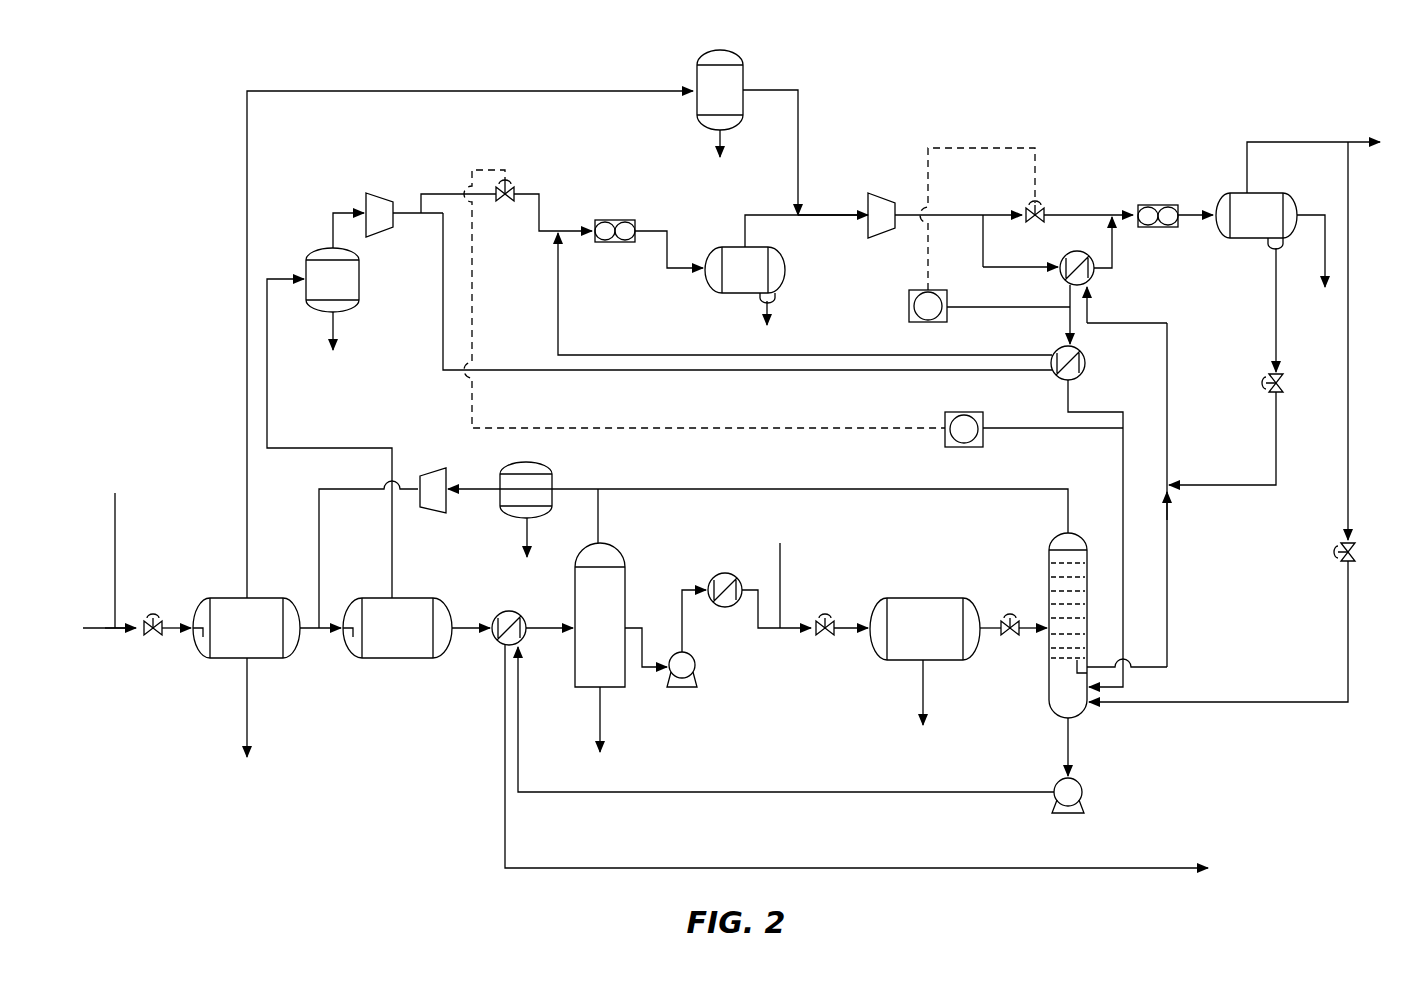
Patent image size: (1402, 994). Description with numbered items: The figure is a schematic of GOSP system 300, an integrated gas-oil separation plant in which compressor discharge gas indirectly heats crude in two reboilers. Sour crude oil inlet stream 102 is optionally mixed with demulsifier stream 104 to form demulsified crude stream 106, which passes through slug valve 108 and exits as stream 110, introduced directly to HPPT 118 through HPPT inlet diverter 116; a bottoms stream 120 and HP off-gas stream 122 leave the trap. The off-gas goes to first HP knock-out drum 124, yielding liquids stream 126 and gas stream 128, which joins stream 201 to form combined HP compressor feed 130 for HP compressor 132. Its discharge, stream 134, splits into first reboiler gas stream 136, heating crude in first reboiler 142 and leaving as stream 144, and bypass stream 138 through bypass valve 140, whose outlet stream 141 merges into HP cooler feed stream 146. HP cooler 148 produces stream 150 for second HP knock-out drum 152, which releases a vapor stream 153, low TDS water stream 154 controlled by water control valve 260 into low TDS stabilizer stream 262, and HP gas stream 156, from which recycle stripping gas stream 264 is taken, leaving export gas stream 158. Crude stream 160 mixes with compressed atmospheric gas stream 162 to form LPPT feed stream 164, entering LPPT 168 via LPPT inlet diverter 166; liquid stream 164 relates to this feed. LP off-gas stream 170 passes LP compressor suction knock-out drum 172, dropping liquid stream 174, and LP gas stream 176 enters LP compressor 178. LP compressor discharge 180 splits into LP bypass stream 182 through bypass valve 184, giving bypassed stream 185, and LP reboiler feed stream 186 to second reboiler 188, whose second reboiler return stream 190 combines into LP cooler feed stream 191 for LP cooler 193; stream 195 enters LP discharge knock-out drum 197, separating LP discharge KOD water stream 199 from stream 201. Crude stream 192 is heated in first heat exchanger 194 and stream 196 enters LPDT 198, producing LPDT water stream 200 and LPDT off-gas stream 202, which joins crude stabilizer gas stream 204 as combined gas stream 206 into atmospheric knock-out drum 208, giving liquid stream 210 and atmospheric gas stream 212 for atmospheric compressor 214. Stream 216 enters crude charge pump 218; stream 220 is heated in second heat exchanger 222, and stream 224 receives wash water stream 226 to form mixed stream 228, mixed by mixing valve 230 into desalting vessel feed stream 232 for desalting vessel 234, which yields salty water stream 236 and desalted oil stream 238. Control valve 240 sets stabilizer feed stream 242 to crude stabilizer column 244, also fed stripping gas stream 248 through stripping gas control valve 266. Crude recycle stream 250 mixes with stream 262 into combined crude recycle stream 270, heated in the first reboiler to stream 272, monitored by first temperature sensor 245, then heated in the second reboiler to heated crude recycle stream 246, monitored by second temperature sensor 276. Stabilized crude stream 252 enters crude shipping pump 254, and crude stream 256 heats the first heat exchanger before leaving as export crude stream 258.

The GOSP system 300 is at (182, 54).
The sour crude oil inlet stream 102 is at (92, 632).
The demulsifier stream 104 is at (118, 505).
The demulsified crude stream 106 is at (130, 632).
The slug valve 108 is at (151, 612).
The stream 110 is at (180, 632).
The HPPT inlet diverter 116 is at (199, 617).
The HPPT 118 is at (246, 628).
The bottoms stream 120 is at (250, 705).
The HP off-gas stream 122 is at (245, 422).
The first HP knock-out drum 124 is at (720, 90).
The liquids stream 126 is at (715, 138).
The gas stream 128 is at (802, 128).
The combined HP compressor feed 130 is at (835, 212).
The HP compressor 132 is at (882, 192).
The stream 134 is at (980, 236).
The first reboiler gas stream 136 is at (1000, 265).
The bypass stream 138 is at (983, 210).
The bypass valve 140 is at (1033, 204).
The stream 141 is at (1075, 211).
The first reboiler 142 is at (1094, 280).
The stream 144 is at (1115, 245).
The HP cooler feed stream 146 is at (1125, 211).
The HP cooler 148 is at (1158, 204).
The stream 150 is at (1195, 211).
The second HP knock-out drum 152 is at (1256, 221).
The vapor outlet stream 153 is at (1312, 213).
The low TDS water stream 154 is at (1274, 318).
The HP gas stream 156 is at (1298, 140).
The export gas stream 158 is at (1362, 140).
The stream 160 is at (308, 622).
The compressed atmospheric gas stream 162 is at (321, 538).
The LPPT feed stream 164 is at (304, 642).
The LPPT inlet diverter 166 is at (350, 618).
The LPPT 168 is at (397, 628).
The LP off-gas stream 170 is at (319, 446).
The LP compressor suction knock-out drum 172 is at (332, 280).
The liquid stream 174 is at (335, 335).
The LP gas stream 176 is at (330, 232).
The LP compressor 178 is at (366, 198).
The LP compressor discharge 180 is at (405, 216).
The LP bypass stream 182 is at (432, 192).
The bypass valve 184 is at (510, 185).
The bypassed stream 185 is at (536, 214).
The LP reboiler feed stream 186 is at (441, 338).
The second reboiler 188 is at (1085, 360).
The second reboiler return stream 190 is at (556, 312).
The LP cooler feed stream 191 is at (572, 236).
The stream 192 is at (468, 622).
The LP cooler 193 is at (618, 219).
The first heat exchanger 194 is at (522, 615).
The stream 195 is at (667, 254).
The stream 196 is at (537, 633).
The LP discharge knock-out drum 197 is at (745, 275).
The LPDT 198 is at (600, 615).
The LP discharge KOD water stream 199 is at (765, 312).
The LPDT water stream 200 is at (598, 708).
The stream 201 is at (770, 213).
The LPDT off-gas stream 202 is at (600, 520).
The crude stabilizer gas stream 204 is at (858, 487).
The combined gas stream 206 is at (582, 487).
The atmospheric knock-out drum 208 is at (526, 490).
The liquid stream 210 is at (529, 535).
The atmospheric gas stream 212 is at (480, 487).
The atmospheric compressor 214 is at (435, 475).
The stream 216 is at (655, 673).
The crude charge pump 218 is at (696, 663).
The stream 220 is at (680, 598).
The second heat exchanger 222 is at (733, 572).
The stream 224 is at (757, 614).
The wash water stream 226 is at (782, 555).
The mixed stream 228 is at (790, 633).
The mixing valve 230 is at (826, 617).
The desalting vessel feed stream 232 is at (842, 633).
The desalting vessel 234 is at (925, 629).
The salty water stream 236 is at (920, 698).
The desalted oil stream 238 is at (990, 634).
The control valve 240 is at (1010, 617).
The stabilizer feed stream 242 is at (1030, 633).
The crude stabilizer column 244 is at (1055, 533).
The first temperature sensor 245 is at (908, 298).
The heated crude recycle stream 246 is at (1105, 410).
The stripping gas stream 248 is at (1346, 640).
The crude recycle stream 250 is at (1169, 590).
The stabilized crude stream 252 is at (1070, 742).
The crude shipping pump 254 is at (1083, 796).
The crude stream 256 is at (780, 790).
The export crude stream 258 is at (845, 866).
The water control valve 260 is at (1266, 383).
The low TDS stabilizer stream 262 is at (1274, 440).
The recycle stripping gas stream 264 is at (1346, 462).
The stripping gas control valve 266 is at (1338, 553).
The combined crude recycle stream 270 is at (1169, 420).
The stream 272 is at (1068, 312).
The second temperature sensor 276 is at (983, 412).